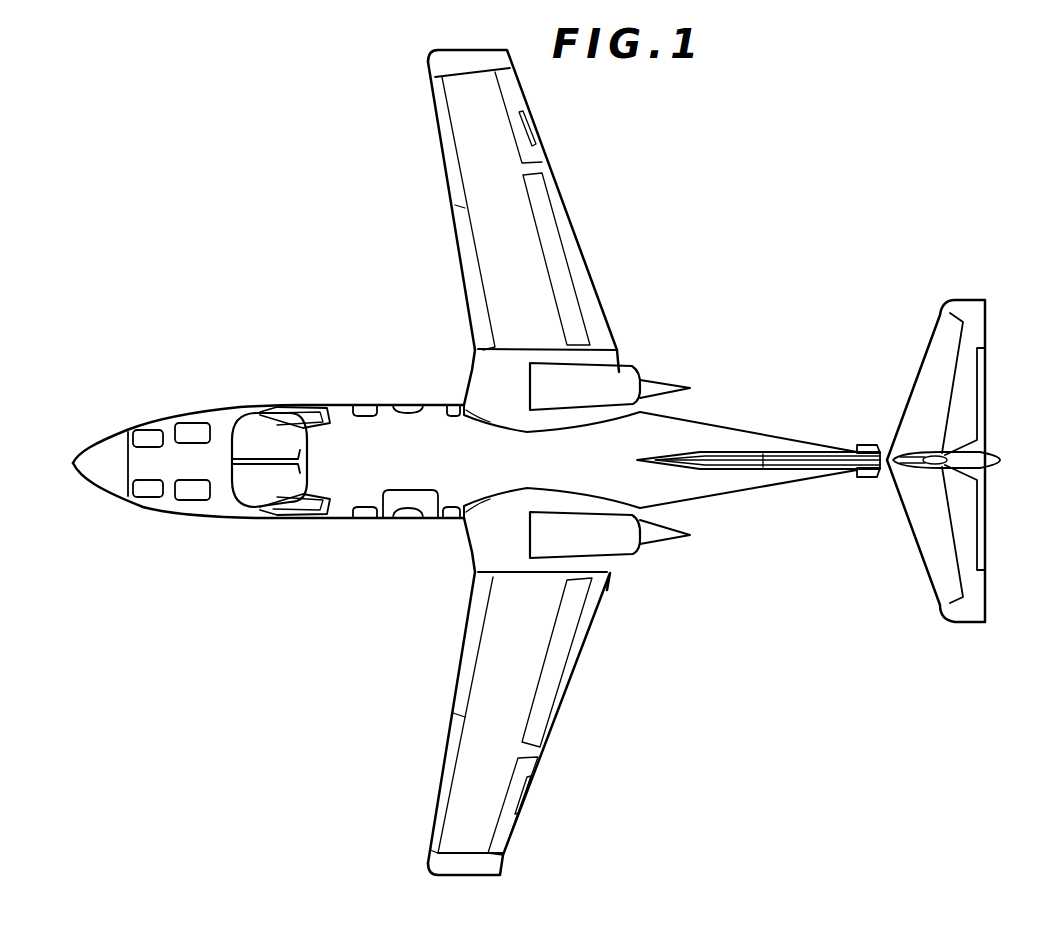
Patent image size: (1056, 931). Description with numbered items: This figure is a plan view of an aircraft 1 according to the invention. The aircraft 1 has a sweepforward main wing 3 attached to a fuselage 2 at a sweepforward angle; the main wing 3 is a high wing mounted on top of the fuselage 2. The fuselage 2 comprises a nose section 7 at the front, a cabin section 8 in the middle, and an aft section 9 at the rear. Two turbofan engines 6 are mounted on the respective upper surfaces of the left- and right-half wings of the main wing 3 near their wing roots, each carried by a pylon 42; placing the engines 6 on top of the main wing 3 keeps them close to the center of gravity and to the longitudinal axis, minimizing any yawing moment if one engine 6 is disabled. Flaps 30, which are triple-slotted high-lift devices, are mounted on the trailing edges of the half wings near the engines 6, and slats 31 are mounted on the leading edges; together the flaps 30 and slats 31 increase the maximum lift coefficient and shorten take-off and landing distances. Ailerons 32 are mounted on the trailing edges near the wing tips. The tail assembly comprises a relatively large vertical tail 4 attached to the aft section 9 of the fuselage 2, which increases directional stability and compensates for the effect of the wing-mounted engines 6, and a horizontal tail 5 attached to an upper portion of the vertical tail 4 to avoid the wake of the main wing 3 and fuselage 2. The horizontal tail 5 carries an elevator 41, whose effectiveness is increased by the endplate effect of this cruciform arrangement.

The aircraft 1 is at (786, 155).
The fuselage 2 is at (386, 392).
The main wing 3 is at (440, 196).
The vertical tail 4 is at (863, 445).
The horizontal tail 5 is at (946, 340).
The turbofan engine 6 is at (614, 378).
The nose section 7 is at (167, 505).
The cabin section 8 is at (348, 512).
The aft section 9 is at (764, 492).
The flap 30 is at (568, 668).
The slat 31 is at (437, 778).
The aileron 32 is at (513, 832).
The elevator 41 is at (963, 388).
The pylon 42 is at (674, 380).